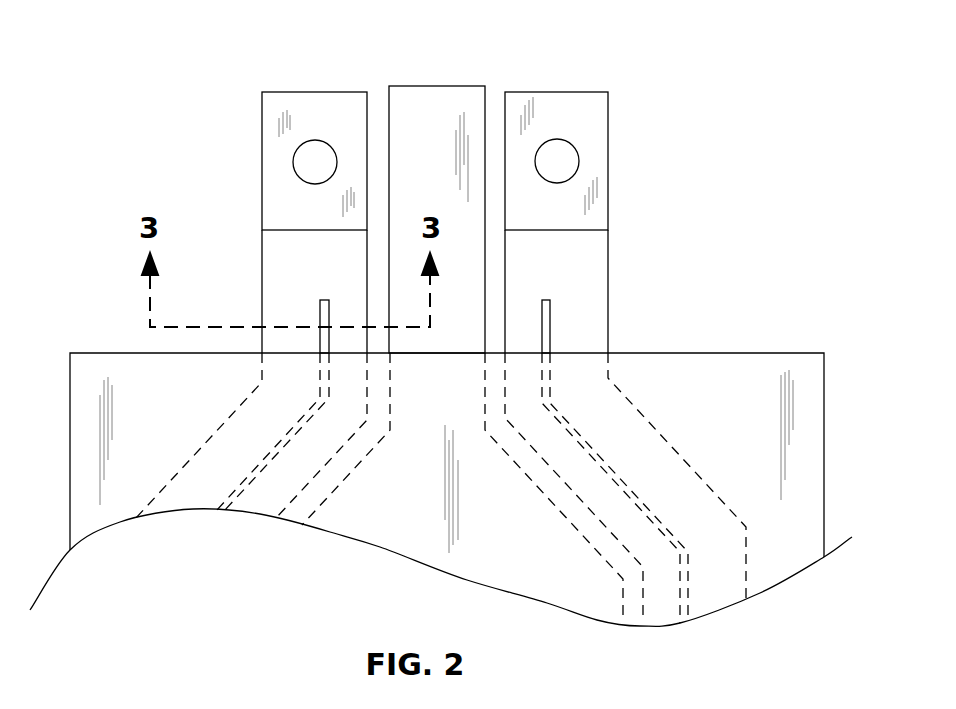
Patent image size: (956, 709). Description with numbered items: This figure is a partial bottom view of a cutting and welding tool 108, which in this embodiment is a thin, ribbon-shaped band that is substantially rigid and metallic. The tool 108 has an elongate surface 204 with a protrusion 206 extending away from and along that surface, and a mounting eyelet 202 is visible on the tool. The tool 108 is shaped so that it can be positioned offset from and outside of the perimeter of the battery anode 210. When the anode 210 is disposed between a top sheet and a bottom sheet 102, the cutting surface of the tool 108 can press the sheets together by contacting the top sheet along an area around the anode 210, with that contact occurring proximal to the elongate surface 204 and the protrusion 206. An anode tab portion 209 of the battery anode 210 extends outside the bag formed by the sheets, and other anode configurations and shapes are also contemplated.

The bottom sheet 102 is at (747, 353).
The cutting and welding tool 108 is at (317, 80).
The mounting eyelet 202 is at (316, 162).
The elongate surface 204 is at (338, 273).
The protrusion 206 is at (321, 300).
The anode tab portion 209 is at (425, 86).
The battery anode 210 is at (390, 500).